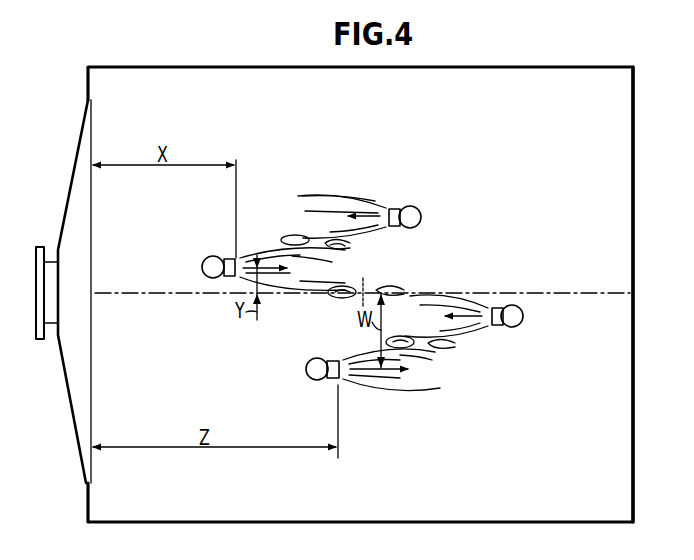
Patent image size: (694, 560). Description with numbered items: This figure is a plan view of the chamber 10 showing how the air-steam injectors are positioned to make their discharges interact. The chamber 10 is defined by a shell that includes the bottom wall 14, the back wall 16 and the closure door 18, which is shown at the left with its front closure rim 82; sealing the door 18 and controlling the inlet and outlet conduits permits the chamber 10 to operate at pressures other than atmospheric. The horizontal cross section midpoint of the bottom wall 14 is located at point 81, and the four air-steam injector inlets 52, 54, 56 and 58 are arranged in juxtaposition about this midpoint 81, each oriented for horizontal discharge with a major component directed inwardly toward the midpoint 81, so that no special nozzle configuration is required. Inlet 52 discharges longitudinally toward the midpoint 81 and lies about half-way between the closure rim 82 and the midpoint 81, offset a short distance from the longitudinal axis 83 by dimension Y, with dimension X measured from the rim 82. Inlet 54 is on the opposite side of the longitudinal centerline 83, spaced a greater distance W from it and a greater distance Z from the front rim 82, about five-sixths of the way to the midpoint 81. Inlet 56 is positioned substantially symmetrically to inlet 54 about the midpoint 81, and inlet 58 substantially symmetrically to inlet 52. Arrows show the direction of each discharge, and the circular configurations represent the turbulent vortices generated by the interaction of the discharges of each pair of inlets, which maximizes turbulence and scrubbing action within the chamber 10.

The chamber 10 is at (369, 113).
The bottom wall 14 is at (550, 151).
The back wall 16 is at (634, 121).
The closure door 18 is at (75, 160).
The air-steam injector inlet 52 is at (203, 270).
The injector conduit inlet 54 is at (308, 376).
The injector inlet 56 is at (421, 223).
The injector inlet 58 is at (521, 326).
The midpoint 81 is at (364, 292).
The front closure rim 82 is at (91, 278).
The longitudinal axis 83 is at (537, 293).